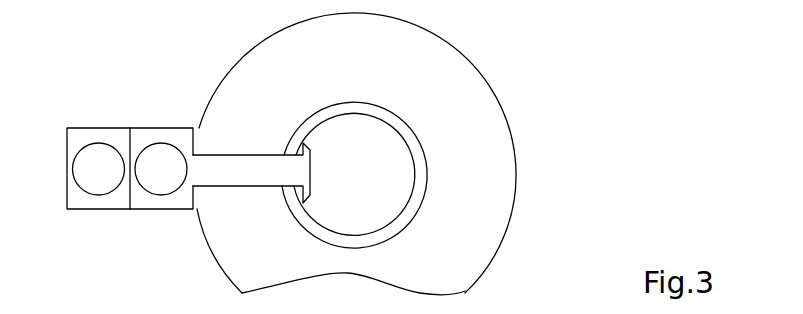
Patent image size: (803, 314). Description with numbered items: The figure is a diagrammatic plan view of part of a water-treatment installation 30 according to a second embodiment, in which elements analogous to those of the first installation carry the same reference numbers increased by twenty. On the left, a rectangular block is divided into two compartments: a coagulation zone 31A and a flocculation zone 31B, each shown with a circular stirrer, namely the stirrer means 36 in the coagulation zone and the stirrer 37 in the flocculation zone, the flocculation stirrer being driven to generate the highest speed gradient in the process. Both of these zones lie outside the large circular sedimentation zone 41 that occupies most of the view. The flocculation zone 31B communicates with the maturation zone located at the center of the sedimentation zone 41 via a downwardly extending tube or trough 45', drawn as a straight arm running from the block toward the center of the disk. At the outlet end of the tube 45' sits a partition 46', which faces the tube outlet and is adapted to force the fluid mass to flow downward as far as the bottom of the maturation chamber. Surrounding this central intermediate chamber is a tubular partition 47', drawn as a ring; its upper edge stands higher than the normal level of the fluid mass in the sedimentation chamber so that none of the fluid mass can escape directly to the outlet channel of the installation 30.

The installation 30 is at (548, 142).
The coagulation zone 31A is at (97, 127).
The flocculation zone 31B is at (163, 127).
The stirrer means 36 is at (82, 193).
The stirrer 37 is at (158, 195).
The sedimentation zone 41 is at (498, 97).
The downwardly extending tube 45' is at (251, 142).
The partition 46' is at (354, 174).
The tubular partition 47' is at (377, 163).